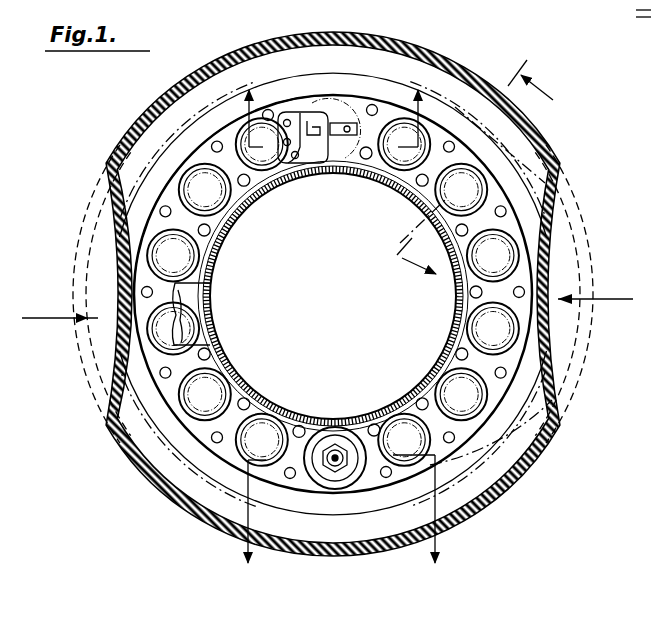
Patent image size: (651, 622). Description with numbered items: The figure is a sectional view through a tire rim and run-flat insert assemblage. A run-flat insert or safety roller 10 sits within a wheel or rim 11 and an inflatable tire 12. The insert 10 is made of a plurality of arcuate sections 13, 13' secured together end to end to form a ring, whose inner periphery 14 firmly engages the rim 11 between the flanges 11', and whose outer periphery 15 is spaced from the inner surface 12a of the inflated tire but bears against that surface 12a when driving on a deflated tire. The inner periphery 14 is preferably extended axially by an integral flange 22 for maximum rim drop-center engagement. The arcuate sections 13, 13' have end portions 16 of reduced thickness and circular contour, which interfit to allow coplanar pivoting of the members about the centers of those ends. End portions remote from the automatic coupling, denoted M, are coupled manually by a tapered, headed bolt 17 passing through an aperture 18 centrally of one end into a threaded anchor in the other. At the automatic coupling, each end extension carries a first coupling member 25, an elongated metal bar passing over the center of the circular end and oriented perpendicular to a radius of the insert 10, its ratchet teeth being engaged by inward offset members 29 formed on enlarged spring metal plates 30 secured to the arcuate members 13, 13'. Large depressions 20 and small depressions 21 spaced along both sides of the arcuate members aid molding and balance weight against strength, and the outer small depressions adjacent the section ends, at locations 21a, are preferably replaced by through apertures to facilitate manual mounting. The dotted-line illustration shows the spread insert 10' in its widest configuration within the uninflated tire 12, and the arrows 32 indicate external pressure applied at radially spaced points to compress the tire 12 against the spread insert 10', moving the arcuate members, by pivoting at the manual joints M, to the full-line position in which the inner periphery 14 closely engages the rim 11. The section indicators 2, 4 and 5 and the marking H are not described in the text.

The run-flat insert 10 is at (366, 294).
The spread insert 10' is at (339, 299).
The wheel or rim 11 is at (333, 296).
The rim flanges 11' is at (223, 314).
The inflatable tire 12 is at (450, 60).
The inner surface of tire 12a is at (328, 547).
The arcuate section 13 is at (371, 294).
The arcuate section 13' is at (186, 194).
The inner periphery 14 is at (360, 176).
The outer periphery 15 is at (212, 498).
The end portion 16 is at (322, 106).
The tapered headed bolt 17 is at (341, 446).
The aperture 18 is at (293, 480).
The large depressions 20 is at (495, 248).
The small depressions 21 is at (468, 358).
The apertures 21a is at (268, 109).
The integral flange 22 is at (474, 296).
The first coupling member 25 is at (346, 127).
The inward offset member 29 is at (308, 114).
The spring metal plate 30 is at (283, 166).
The arrows 32 is at (50, 316).
The section line 2- 2 is at (470, 165).
The section line 4- 4 is at (325, 107).
The section line 5- 5 is at (339, 524).
The hydraulic connection H is at (339, 82).
The manual coupling M is at (381, 498).